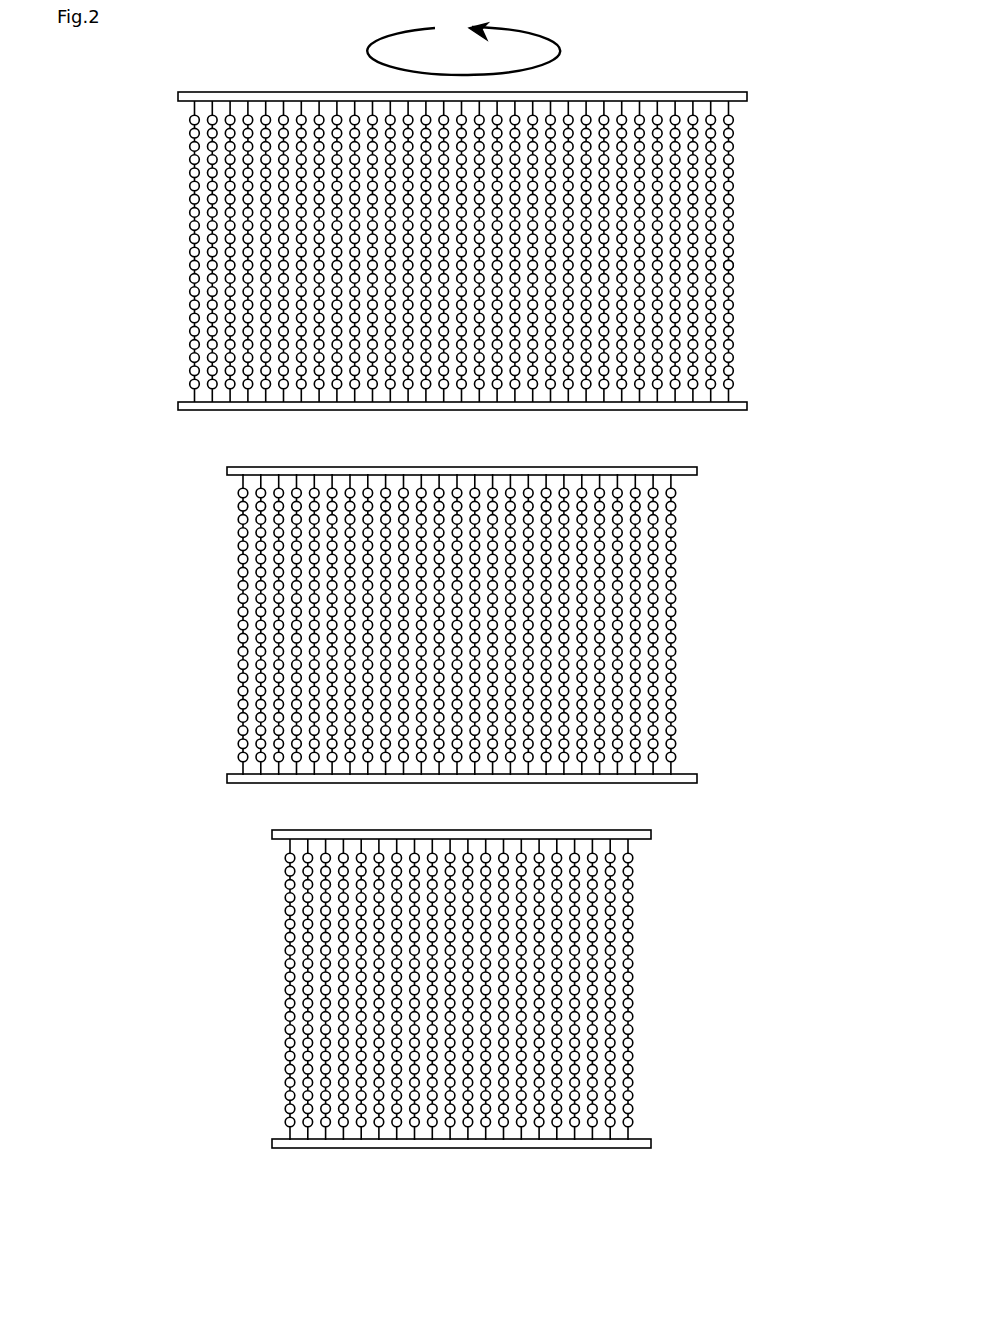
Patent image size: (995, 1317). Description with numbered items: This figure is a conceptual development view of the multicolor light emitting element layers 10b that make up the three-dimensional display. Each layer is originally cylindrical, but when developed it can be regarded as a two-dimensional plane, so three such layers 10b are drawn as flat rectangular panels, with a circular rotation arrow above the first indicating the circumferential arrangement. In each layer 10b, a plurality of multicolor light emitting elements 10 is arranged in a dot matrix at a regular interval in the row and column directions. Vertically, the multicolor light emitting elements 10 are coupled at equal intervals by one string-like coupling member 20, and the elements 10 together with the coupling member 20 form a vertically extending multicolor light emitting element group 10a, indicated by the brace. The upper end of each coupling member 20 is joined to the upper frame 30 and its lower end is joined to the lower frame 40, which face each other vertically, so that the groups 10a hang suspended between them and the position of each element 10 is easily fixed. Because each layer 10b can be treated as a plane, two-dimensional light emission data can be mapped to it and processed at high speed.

The multicolor light emitting element 10 is at (734, 186).
The multicolor light emitting element group 10a is at (470, 251).
The multicolor light emitting element layer 10b is at (479, 592).
The coupling member 20 is at (734, 268).
The upper frame 30 is at (231, 92).
The lower frame 40 is at (200, 410).